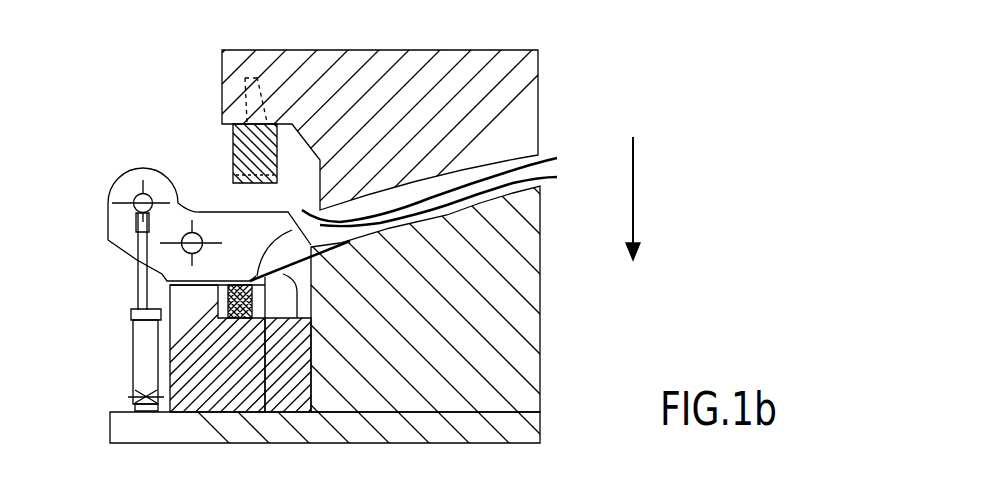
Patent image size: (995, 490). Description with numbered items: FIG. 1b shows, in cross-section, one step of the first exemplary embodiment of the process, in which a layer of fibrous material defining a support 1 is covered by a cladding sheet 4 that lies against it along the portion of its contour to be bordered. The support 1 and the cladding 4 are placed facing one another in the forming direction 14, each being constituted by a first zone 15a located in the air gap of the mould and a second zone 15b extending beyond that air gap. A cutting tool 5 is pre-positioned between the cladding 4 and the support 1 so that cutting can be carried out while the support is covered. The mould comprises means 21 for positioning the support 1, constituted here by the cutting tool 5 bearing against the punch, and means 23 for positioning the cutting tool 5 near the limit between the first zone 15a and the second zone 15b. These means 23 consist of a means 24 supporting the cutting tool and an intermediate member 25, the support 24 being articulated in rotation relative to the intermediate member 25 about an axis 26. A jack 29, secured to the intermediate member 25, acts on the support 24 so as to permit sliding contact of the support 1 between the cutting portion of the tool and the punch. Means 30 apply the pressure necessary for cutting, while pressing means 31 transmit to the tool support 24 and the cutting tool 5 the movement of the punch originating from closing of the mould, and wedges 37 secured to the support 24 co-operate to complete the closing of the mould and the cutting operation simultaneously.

The support 1 is at (557, 177).
The cladding sheet 4 is at (557, 158).
The cutting tool 5 is at (267, 412).
The forming direction 14 is at (632, 200).
The first zone 15a is at (450, 192).
The second zone 15b is at (314, 210).
The means for positioning the support 21 is at (92, 190).
The means for positioning the cutting tool 23 is at (114, 308).
The means supporting the cutting tool 24 is at (178, 205).
The intermediate member 25 is at (215, 380).
The axis 26 is at (181, 249).
The jack 29 is at (132, 377).
The means for applying a pressure 30 is at (212, 110).
The pressing means 31 is at (212, 135).
The wedges 37 is at (100, 350).